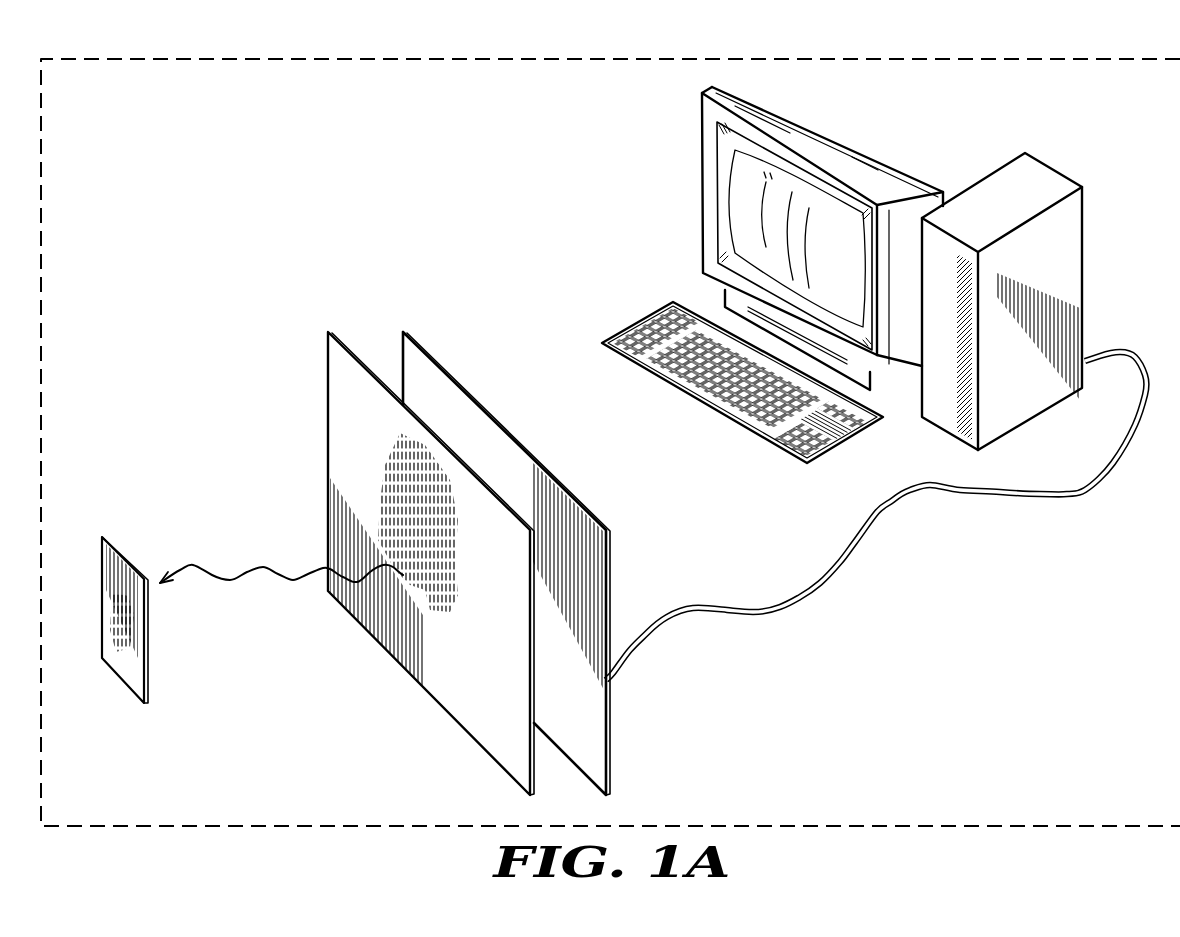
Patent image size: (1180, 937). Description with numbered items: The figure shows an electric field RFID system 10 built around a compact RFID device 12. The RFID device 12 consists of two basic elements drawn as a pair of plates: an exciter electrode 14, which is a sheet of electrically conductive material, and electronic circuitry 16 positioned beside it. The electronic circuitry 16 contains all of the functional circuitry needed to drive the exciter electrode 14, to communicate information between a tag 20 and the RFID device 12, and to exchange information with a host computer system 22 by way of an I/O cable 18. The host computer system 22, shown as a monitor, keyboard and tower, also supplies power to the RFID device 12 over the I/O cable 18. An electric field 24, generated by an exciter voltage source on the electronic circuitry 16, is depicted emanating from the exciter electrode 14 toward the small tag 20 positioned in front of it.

The electric field RFID system 10 is at (710, 58).
The RFID device 12 is at (449, 529).
The exciter electrode 14 is at (411, 560).
The electronic circuitry 16 is at (455, 378).
The I/O cable 18 is at (787, 613).
The tag 20 is at (150, 662).
The host computer system 22 is at (890, 158).
The electric field 24 is at (230, 580).